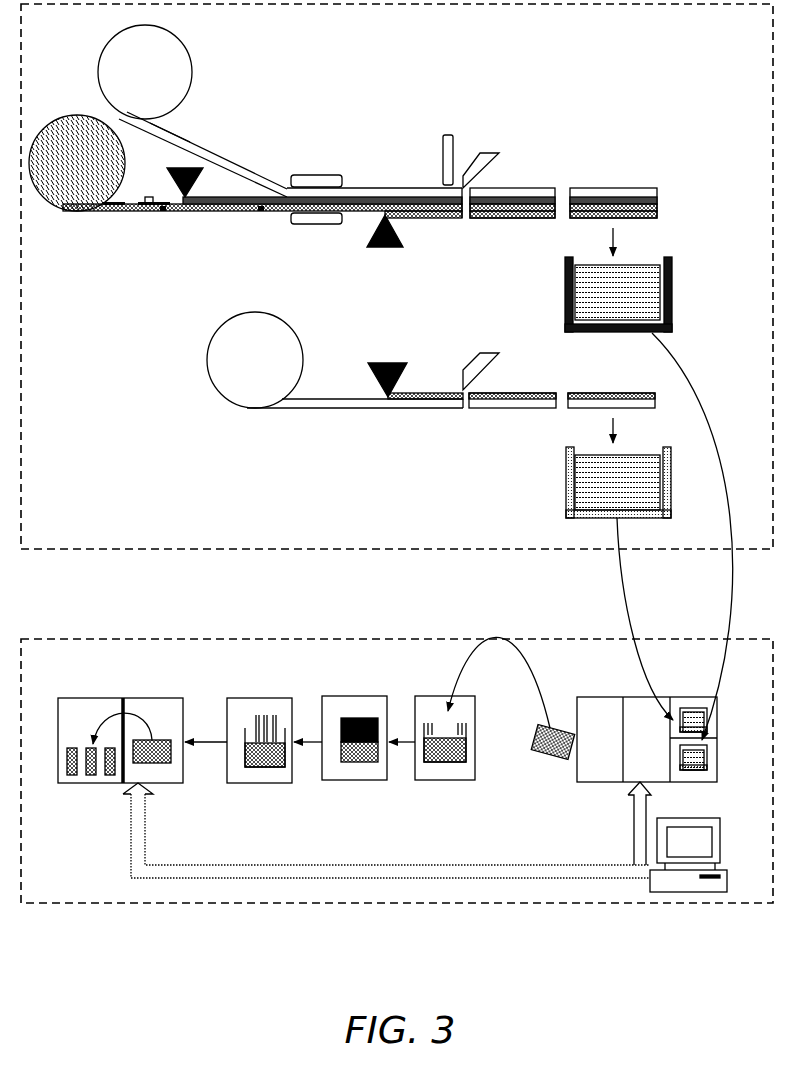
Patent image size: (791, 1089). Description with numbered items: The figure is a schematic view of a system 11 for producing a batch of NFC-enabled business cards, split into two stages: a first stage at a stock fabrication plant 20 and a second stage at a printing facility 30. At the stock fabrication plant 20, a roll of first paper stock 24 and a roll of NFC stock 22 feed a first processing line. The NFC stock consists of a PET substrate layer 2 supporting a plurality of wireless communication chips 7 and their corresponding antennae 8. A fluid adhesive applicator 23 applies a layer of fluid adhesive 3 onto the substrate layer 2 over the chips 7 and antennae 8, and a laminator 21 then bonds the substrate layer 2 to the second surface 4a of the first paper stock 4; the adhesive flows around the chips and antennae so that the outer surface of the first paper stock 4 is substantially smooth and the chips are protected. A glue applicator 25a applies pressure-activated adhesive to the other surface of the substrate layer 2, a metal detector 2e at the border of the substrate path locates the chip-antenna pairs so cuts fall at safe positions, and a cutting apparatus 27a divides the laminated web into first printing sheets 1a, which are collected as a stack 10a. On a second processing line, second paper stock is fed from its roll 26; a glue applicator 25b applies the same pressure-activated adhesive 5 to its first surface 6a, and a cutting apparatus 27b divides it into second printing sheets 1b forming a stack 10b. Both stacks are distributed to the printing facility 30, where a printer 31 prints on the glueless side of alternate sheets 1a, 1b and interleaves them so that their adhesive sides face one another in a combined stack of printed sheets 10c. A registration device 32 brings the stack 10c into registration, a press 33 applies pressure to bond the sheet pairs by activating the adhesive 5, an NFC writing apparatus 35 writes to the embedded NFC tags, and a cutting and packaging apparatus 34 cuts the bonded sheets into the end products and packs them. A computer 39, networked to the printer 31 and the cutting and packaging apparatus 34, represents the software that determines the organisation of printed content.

The stock fabrication plant 20 is at (188, 550).
The printing facility 30 is at (160, 903).
The roll of first paper stock 24 is at (122, 85).
The roll of NFC stock 22 is at (68, 196).
The first paper stock 4 is at (243, 172).
The second surface of first paper stock 4a is at (187, 133).
The substrate layer 2 is at (126, 213).
The wireless communication chips 7 is at (148, 213).
The antennae 8 is at (165, 213).
The layer of fluid adhesive 3 is at (225, 213).
The fluid adhesive applicator 23 is at (180, 178).
The laminator 21 is at (310, 226).
The pressure-activated adhesive 5 is at (440, 218).
The glue applicator 25a is at (385, 250).
The metal detector 2e is at (443, 150).
The cutting apparatus 27a is at (491, 153).
The first printing sheets 1a is at (506, 229).
The stack of first printing sheets 10a is at (673, 295).
The roll of second paper stock 26 is at (212, 352).
The first surface of second paper stock 6a is at (322, 397).
The glue applicator 25b is at (385, 362).
The cutting apparatus 27b is at (493, 352).
The second printing sheets 1b is at (511, 411).
The stack of second printing sheets 10b is at (671, 508).
The printer 31 is at (585, 783).
The stack of printed sheets 10c is at (548, 750).
The registration device 32 is at (430, 780).
The press 33 is at (363, 780).
The NFC writing apparatus 35 is at (270, 783).
The cutting and packaging apparatus 34 is at (100, 783).
The computer 39 is at (695, 893).
The system 11 is at (680, 983).